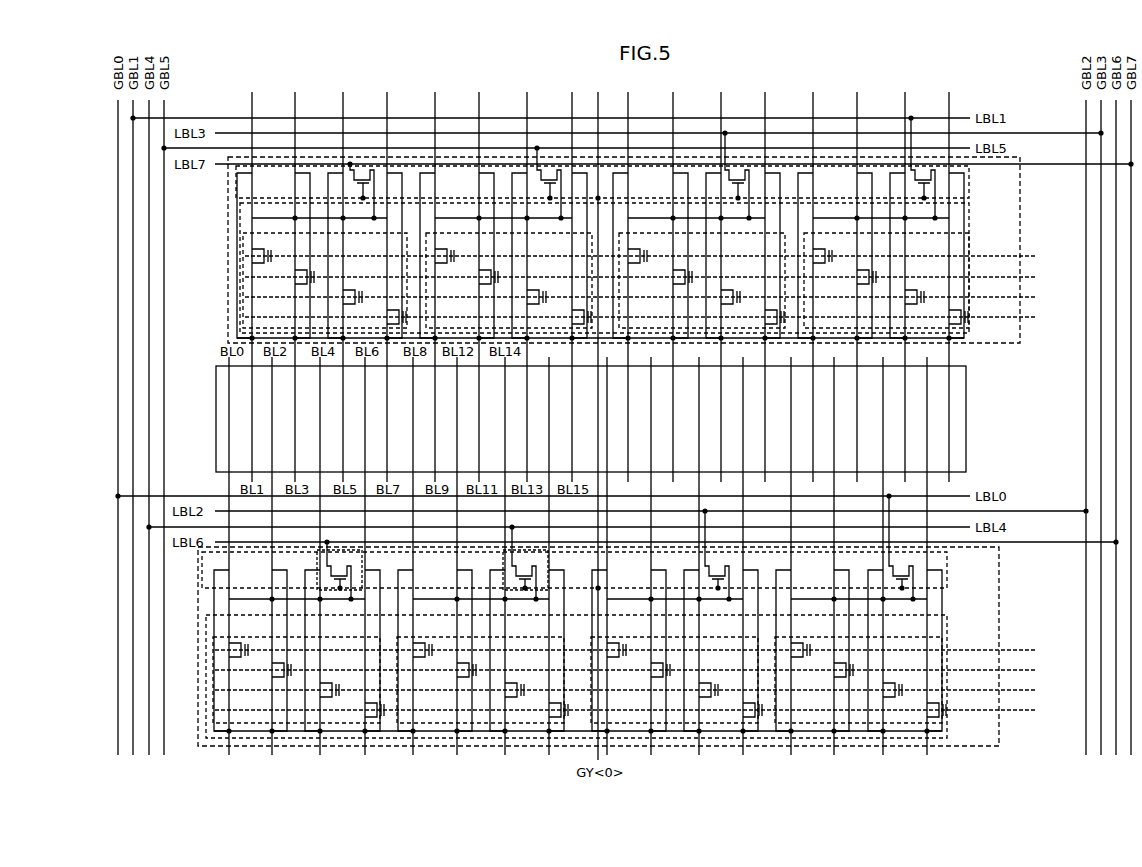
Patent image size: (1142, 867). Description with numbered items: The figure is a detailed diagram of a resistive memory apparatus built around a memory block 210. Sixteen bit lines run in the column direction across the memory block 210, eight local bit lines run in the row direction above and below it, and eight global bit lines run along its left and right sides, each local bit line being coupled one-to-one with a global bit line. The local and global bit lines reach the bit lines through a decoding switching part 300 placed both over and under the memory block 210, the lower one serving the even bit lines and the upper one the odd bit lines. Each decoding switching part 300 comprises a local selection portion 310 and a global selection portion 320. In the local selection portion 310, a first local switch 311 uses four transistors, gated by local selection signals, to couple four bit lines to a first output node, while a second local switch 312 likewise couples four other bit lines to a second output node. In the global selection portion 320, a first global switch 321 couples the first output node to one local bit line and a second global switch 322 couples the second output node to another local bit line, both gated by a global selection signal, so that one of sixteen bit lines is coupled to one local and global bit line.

The memory block 210 is at (966, 418).
The decoding switching part 300 is at (1015, 607).
The local selection portion 310 is at (645, 455).
The first local switch 311 is at (335, 637).
The second local switch 312 is at (520, 637).
The global selection portion 320 is at (621, 357).
The first global switch 321 is at (362, 562).
The second global switch 322 is at (548, 562).